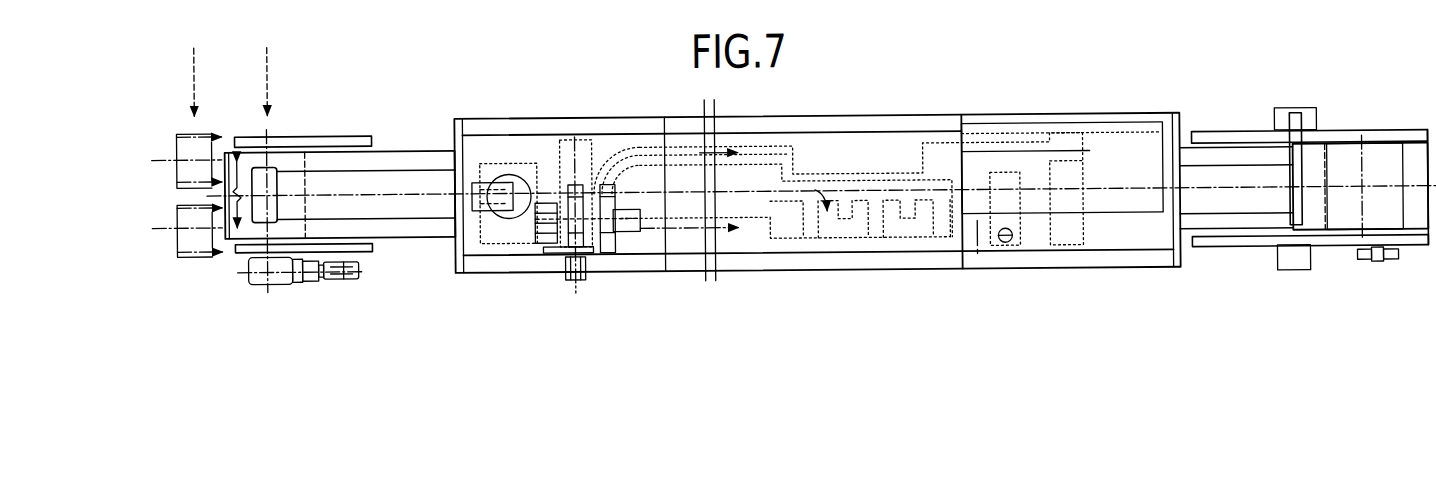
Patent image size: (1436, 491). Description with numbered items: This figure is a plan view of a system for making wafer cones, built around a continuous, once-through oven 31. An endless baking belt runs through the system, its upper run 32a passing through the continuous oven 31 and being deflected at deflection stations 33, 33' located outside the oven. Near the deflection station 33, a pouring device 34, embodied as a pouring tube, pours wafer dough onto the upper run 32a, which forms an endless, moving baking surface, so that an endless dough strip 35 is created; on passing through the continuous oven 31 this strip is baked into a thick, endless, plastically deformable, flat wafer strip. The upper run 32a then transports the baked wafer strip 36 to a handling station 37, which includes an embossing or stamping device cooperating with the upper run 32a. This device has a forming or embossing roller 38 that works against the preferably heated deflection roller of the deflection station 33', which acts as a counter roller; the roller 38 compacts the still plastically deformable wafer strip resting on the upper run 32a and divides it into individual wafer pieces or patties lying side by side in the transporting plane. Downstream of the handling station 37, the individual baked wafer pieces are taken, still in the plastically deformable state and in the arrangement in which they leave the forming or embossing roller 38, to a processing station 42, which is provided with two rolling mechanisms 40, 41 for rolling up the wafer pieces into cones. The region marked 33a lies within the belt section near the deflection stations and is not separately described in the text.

The continuous oven 31 is at (807, 263).
The upper run of the endless baking belt 32a is at (425, 158).
The deflection station 33 is at (1310, 235).
The deflection station (deflection roller) 33' is at (314, 171).
The cylinder chamber 33a is at (292, 161).
The pouring device 34 is at (1276, 124).
The endless dough strip 35 is at (1238, 207).
The baked wafer strip 36 is at (408, 208).
The handling station 37 is at (267, 66).
The forming or embossing roller 38 is at (260, 183).
The rolling mechanism 40 is at (185, 142).
The rolling mechanism 41 is at (185, 237).
The processing station 42 is at (198, 67).